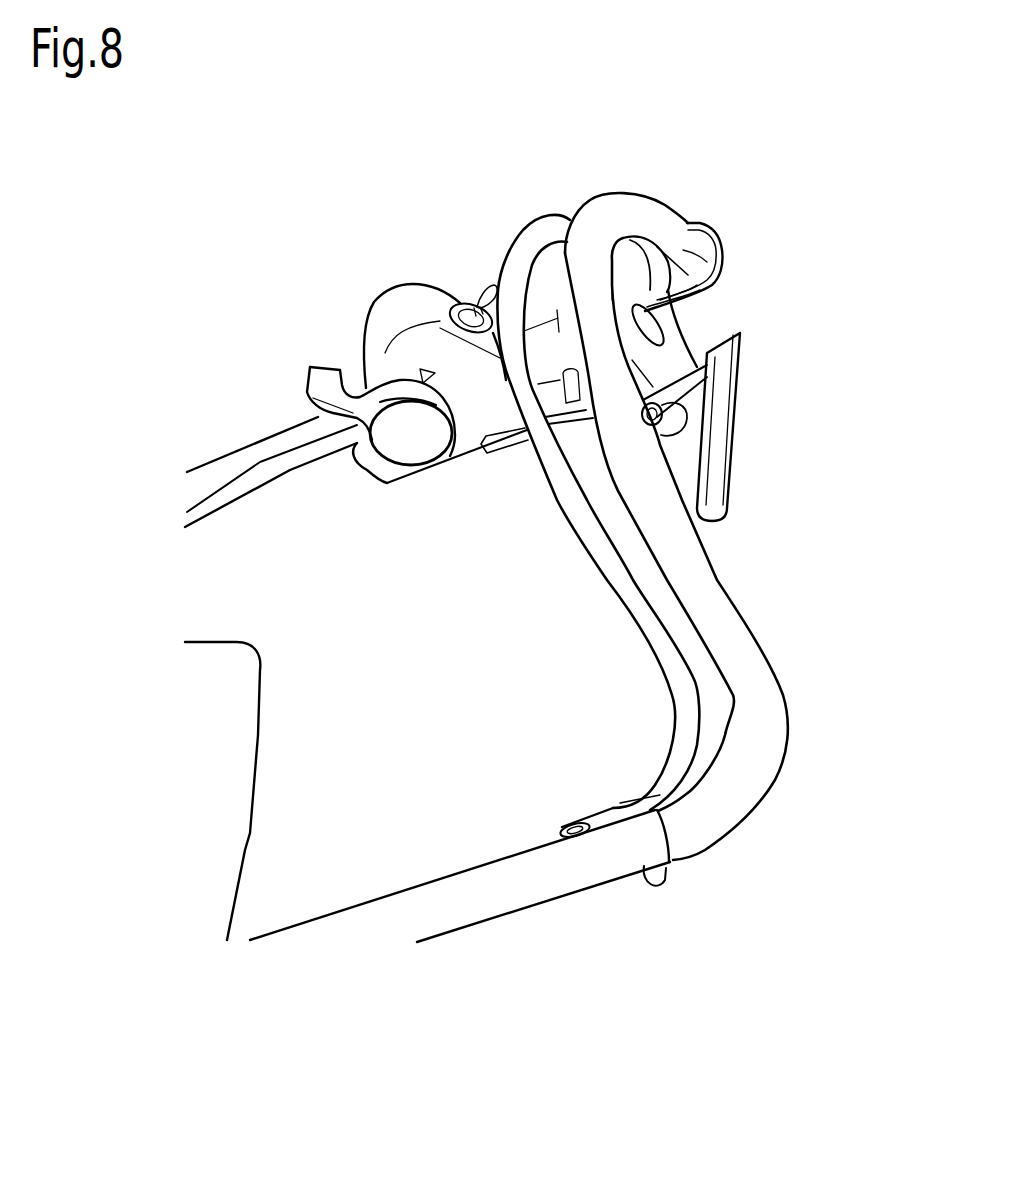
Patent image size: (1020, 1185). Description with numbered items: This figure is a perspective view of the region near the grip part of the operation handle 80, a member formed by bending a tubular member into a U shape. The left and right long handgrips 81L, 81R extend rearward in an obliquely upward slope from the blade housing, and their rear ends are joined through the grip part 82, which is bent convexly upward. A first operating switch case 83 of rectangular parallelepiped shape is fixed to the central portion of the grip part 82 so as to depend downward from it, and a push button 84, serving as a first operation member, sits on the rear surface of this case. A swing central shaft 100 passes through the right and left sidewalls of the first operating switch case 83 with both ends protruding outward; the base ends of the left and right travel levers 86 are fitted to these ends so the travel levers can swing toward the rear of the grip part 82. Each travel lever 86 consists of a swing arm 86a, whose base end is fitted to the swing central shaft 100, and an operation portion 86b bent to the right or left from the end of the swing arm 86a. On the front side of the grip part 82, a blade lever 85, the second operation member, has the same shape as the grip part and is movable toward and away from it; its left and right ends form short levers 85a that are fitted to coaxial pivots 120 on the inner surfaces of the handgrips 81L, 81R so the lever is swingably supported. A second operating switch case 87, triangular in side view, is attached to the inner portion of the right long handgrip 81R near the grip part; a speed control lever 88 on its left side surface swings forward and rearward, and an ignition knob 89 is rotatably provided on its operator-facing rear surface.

The operation handle 80 is at (774, 609).
The left long handgrip 81L is at (438, 925).
The right long handgrip 81R is at (242, 447).
The grip part 82 is at (600, 210).
The first operating switch case 83 is at (673, 353).
The push button 84 is at (683, 304).
The blade lever 85 is at (521, 234).
The short lever 85a is at (603, 807).
The travel lever 86 is at (843, 173).
The swing arm 86a is at (677, 303).
The operation portion 86b is at (693, 223).
The second operating switch case 87 is at (397, 308).
The speed control lever 88 is at (323, 387).
The ignition knob 89 is at (480, 294).
The swing central shaft 100 is at (673, 447).
The pivot 120 is at (573, 819).